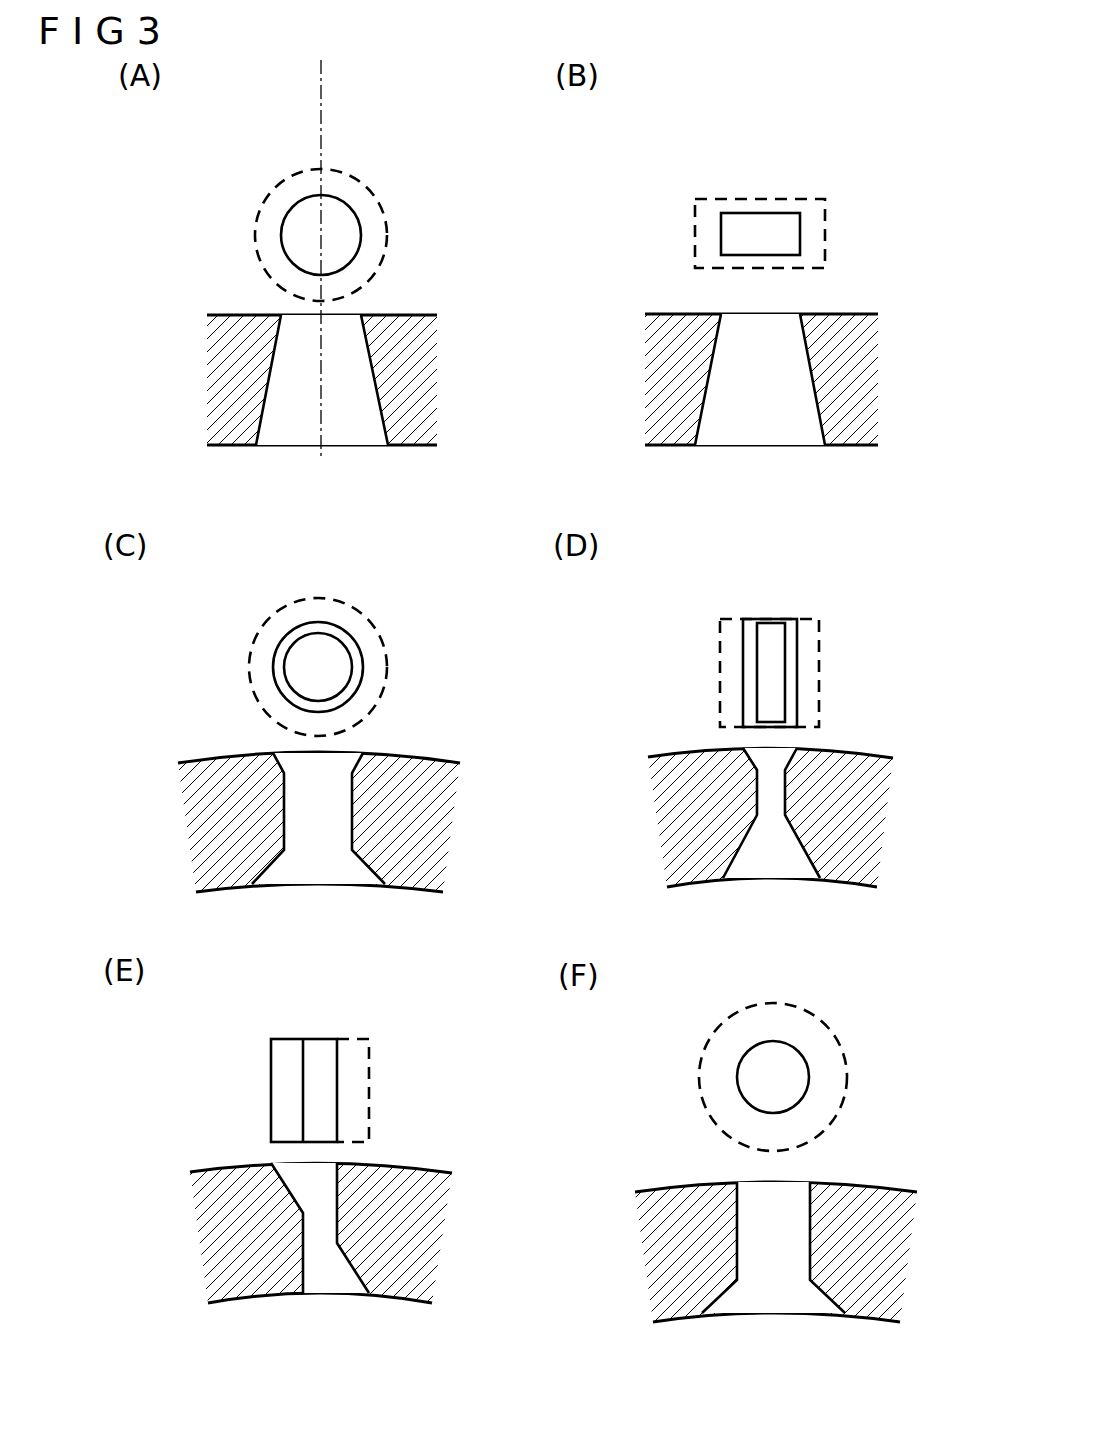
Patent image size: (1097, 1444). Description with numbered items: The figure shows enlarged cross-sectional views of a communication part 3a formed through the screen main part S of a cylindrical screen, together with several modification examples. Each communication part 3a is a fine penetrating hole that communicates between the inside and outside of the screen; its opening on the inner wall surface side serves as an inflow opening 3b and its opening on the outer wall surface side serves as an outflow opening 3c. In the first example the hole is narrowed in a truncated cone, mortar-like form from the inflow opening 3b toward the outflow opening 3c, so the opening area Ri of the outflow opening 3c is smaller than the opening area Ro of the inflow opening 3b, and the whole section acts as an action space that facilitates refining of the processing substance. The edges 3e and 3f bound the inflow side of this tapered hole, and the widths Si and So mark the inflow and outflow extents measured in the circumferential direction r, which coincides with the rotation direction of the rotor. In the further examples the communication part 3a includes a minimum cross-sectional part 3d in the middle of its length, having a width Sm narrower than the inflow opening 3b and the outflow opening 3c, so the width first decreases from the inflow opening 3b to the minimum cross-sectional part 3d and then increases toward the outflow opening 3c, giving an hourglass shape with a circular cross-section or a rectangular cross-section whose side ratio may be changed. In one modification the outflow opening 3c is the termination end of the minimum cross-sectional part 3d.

The communication part 3a is at (331, 218).
The inflow opening 3b is at (388, 233).
The outflow opening 3c is at (362, 236).
The minimum cross-sectional part 3d is at (352, 672).
The one edge of inner opening 3e is at (255, 450).
The other edge of inner opening 3f is at (385, 449).
The screen main part S is at (232, 314).
The circumferential direction r is at (220, 356).
The opening area of inflow opening Ro is at (762, 1182).
The opening area of outflow opening Ri is at (770, 1330).
The inner opening width Si is at (388, 445).
The outer opening width So is at (361, 445).
The width of minimum cross-sectional part Sm is at (352, 700).